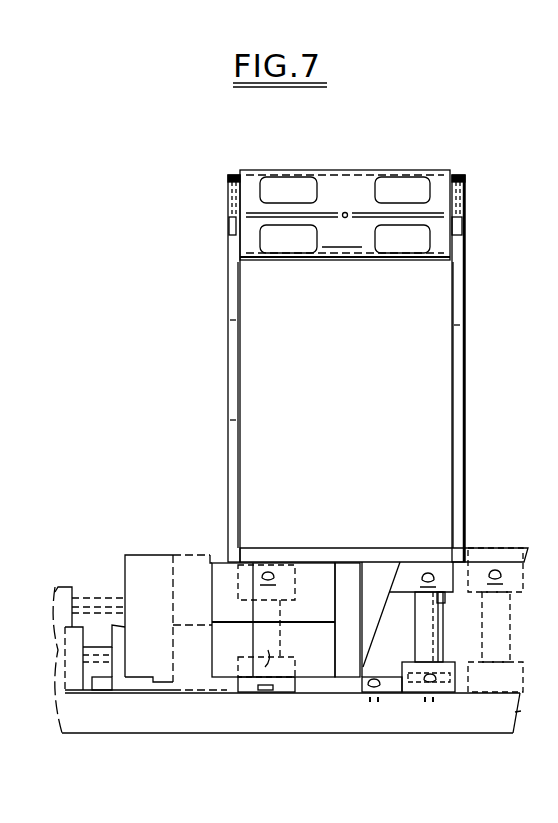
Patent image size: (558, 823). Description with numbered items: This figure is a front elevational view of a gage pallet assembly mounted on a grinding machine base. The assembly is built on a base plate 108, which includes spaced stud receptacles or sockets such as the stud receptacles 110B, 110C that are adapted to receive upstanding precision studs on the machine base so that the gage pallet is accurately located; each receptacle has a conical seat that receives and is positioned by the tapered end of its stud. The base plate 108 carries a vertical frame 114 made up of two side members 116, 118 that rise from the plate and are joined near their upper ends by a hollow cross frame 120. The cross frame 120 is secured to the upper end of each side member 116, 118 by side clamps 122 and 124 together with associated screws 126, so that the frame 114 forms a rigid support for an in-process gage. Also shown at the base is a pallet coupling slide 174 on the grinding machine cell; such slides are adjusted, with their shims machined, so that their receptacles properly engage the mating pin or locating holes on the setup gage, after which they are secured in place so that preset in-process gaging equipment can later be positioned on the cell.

The base plate 108 is at (438, 550).
The stud receptacle 110B is at (400, 577).
The stud receptacle 110C is at (240, 688).
The vertical frame 114 is at (470, 284).
The side member 116 is at (228, 362).
The side member 118 is at (462, 362).
The hollow cross frame 120 is at (341, 160).
The side clamp 122 is at (463, 197).
The side clamp 124 is at (228, 206).
The screws 126 is at (460, 174).
The pallet coupling slide 174 is at (188, 556).